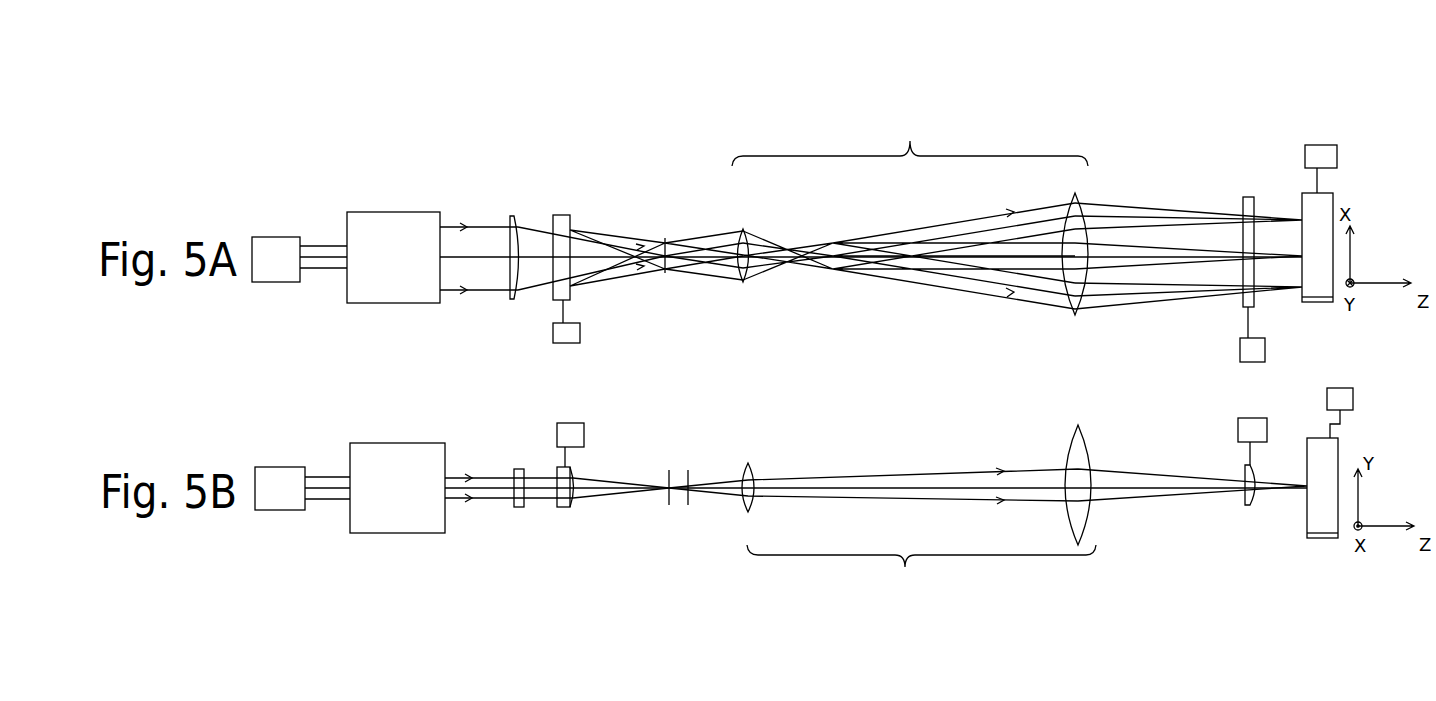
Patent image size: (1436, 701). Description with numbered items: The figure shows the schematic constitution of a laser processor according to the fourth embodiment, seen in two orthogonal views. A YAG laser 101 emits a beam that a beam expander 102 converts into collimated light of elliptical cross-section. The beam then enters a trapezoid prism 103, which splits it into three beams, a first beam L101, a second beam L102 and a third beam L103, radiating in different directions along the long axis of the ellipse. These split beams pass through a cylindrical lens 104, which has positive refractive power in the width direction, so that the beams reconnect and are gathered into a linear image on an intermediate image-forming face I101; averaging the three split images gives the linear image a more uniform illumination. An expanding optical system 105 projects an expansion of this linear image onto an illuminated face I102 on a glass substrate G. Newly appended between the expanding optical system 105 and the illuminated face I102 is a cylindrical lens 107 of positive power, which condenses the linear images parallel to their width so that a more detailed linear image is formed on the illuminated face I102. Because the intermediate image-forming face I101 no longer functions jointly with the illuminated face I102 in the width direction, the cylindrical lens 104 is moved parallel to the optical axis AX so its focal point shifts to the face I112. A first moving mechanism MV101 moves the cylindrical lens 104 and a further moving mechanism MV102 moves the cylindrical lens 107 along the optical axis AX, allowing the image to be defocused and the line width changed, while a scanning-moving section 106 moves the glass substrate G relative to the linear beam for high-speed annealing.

In FIG. 5A, the YAG laser 101 is at (267, 235).
In FIG. 5B, the YAG laser 101 is at (295, 510).
In FIG. 5A, the beam expander 102 is at (380, 215).
In FIG. 5B, the beam expander 102 is at (427, 533).
In FIG. 5A, the trapezoid prism 103 is at (513, 215).
In FIG. 5B, the trapezoid prism 103 is at (518, 507).
In FIG. 5A, the cylindrical lens 104 is at (560, 215).
In FIG. 5B, the cylindrical lens 104 is at (565, 508).
In FIG. 5A, the expanding optical system 105 is at (910, 141).
In FIG. 5B, the expanding optical system 105 is at (921, 515).
In FIG. 5A, the scanning-moving section 106 is at (1337, 158).
In FIG. 5B, the scanning-moving section 106 is at (1367, 395).
In FIG. 5A, the cylindrical lens 107 is at (1247, 195).
In FIG. 5B, the cylindrical lens 107 is at (1252, 505).
In FIG. 5A, the optical axis AX is at (484, 262).
In FIG. 5A, the first beam L101 is at (531, 228).
In FIG. 5A, the second beam L102 is at (523, 293).
In FIG. 5A, the third beam L103 is at (538, 278).
In FIG. 5A, the intermediate image-forming face I101 is at (664, 240).
In FIG. 5B, the intermediate image-forming face I101 is at (668, 488).
In FIG. 5B, the face I112 is at (688, 478).
In FIG. 5A, the illuminated face I102 is at (1302, 290).
In FIG. 5B, the illuminated face I102 is at (1307, 524).
In FIG. 5A, the glass substrate G is at (1321, 293).
In FIG. 5B, the glass substrate G is at (1323, 538).
In FIG. 5A, the first moving mechanism MV101 is at (562, 343).
In FIG. 5B, the first moving mechanism MV101 is at (573, 423).
In FIG. 5A, the first moving mechanism MV102 is at (1240, 356).
In FIG. 5B, the first moving mechanism MV102 is at (1238, 432).